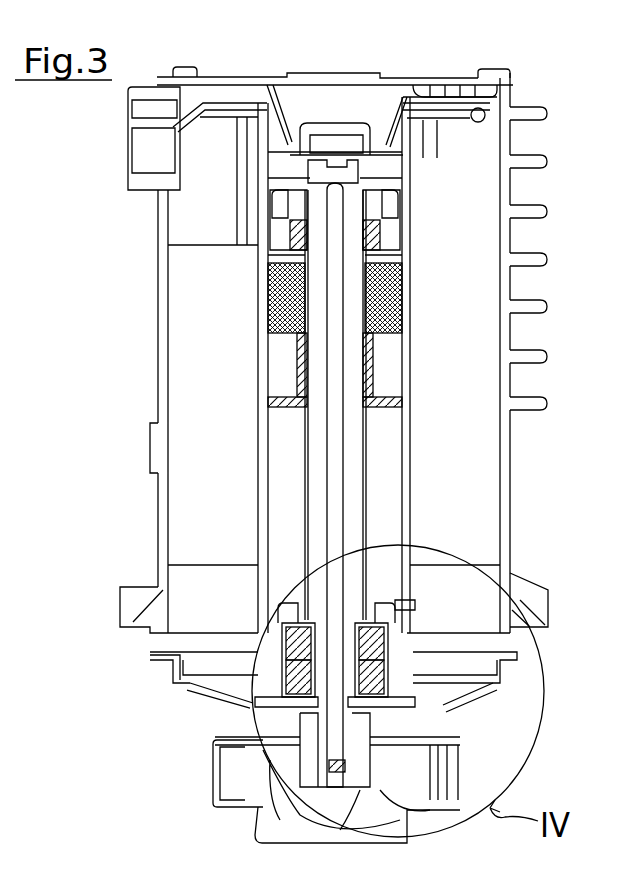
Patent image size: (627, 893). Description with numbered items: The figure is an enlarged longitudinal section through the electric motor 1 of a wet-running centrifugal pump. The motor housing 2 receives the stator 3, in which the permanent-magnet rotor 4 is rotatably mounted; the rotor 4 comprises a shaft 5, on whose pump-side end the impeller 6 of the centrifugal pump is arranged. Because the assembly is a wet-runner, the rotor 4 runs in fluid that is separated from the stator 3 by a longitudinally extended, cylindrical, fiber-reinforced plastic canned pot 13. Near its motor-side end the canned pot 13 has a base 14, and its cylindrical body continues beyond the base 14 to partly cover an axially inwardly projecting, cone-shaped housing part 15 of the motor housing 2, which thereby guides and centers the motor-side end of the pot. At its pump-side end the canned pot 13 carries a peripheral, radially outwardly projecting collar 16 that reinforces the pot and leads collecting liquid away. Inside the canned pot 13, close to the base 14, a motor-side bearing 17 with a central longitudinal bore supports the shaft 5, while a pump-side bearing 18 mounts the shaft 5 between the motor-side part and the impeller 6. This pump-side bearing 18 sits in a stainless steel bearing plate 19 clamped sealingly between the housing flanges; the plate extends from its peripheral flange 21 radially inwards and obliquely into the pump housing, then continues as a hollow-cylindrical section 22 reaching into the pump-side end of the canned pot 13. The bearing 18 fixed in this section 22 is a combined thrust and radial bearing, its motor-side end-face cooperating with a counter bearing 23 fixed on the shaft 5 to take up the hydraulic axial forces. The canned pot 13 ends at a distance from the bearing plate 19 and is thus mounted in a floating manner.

The electric motor 1 is at (541, 148).
The motor housing 2 is at (512, 244).
The stator 3 is at (480, 303).
The rotor 4 is at (262, 300).
The shaft 5 is at (355, 467).
The impeller 6 is at (225, 777).
The canned pot 13 is at (400, 510).
The base 14 is at (273, 203).
The cone-shaped housing part 15 is at (277, 140).
The collar 16 is at (490, 737).
The motor-side bearing 17 is at (412, 212).
The pump-side bearing 18 is at (520, 588).
The bearing plate 19 is at (200, 690).
The peripheral flange 21 is at (517, 664).
The hollow-cylindrical section 22 is at (250, 695).
The counter bearing 23 is at (405, 628).